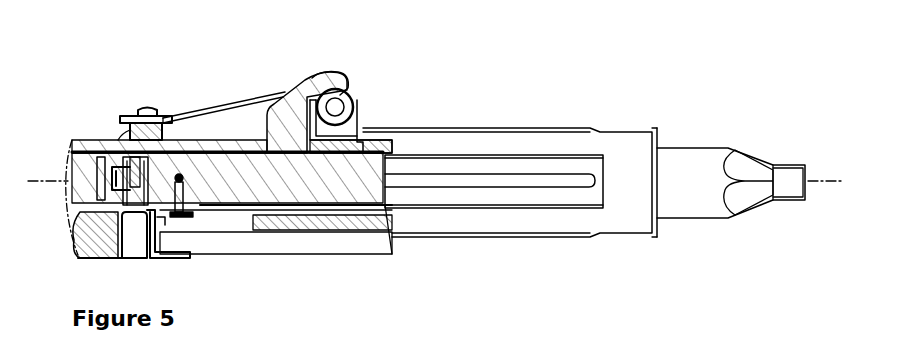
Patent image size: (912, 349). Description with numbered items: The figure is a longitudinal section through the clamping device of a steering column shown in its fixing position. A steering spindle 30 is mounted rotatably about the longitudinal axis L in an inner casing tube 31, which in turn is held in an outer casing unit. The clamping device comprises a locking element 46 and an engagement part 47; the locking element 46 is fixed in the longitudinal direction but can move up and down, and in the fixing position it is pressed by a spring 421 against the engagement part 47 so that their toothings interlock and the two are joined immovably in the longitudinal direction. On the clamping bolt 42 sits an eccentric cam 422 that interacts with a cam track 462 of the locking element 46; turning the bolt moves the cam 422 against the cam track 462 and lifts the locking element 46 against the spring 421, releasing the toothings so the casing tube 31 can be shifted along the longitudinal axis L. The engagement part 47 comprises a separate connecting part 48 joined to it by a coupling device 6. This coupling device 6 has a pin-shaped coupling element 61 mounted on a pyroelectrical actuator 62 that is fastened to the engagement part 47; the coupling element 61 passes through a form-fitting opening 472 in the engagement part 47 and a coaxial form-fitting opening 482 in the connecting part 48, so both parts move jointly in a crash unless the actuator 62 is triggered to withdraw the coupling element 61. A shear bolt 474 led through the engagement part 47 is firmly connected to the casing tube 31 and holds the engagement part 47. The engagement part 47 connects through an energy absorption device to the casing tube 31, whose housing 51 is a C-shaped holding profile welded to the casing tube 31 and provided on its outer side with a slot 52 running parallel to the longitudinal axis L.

The coupling device 6 is at (92, 263).
The steering spindle 30 is at (680, 170).
The inner casing tube 31 is at (575, 140).
The clamping bolt 42 is at (365, 103).
The locking element 46 is at (296, 112).
The engagement part 47 is at (345, 185).
The connecting part 48 is at (97, 168).
The housing 51 is at (540, 165).
The slot 52 is at (484, 178).
The coupling element 61 is at (112, 195).
The pyroelectrical actuator 62 is at (136, 240).
The spring 421 is at (229, 103).
The eccentric cam 422 is at (347, 100).
The cam track 462 is at (326, 90).
The form-fitting opening 472 is at (95, 215).
The shear bolt 474 is at (180, 173).
The form-fitting opening 482 is at (125, 133).
The longitudinal axis L is at (830, 180).